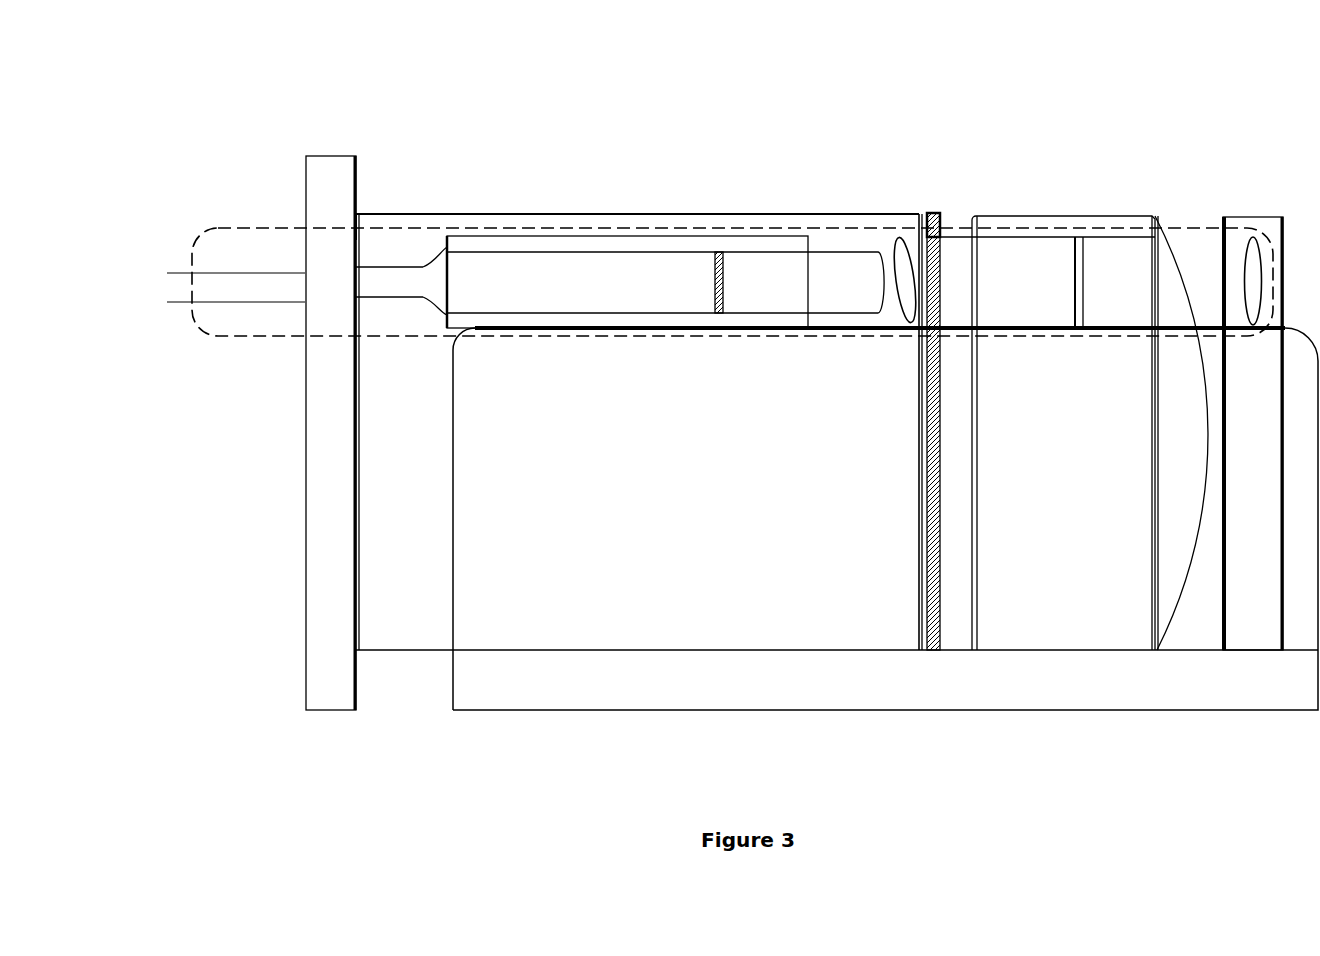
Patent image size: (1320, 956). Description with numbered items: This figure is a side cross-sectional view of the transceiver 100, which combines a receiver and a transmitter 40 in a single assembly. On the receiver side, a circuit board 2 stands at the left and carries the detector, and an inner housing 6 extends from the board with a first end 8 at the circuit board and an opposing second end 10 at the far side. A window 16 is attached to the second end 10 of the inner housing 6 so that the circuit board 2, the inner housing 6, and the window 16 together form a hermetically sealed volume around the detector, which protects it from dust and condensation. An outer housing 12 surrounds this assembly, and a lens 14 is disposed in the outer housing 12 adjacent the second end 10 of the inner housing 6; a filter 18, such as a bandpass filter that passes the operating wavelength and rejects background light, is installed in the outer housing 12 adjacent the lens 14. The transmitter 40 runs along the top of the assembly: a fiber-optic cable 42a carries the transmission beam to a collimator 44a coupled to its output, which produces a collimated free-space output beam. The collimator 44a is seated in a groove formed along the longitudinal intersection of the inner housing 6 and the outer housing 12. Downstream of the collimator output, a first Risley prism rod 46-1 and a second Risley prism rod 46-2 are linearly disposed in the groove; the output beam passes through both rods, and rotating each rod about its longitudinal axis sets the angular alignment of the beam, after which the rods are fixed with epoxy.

The transceiver 100 is at (825, 78).
The circuit board 2 is at (332, 165).
The fiber-optic cable 42a is at (258, 285).
The first end 8 is at (360, 218).
The inner housing 6 is at (622, 180).
The collimator 44a is at (668, 303).
The transmitter 40 is at (740, 337).
The second end 10 is at (921, 226).
The first Risley prism rod 46-1 is at (962, 237).
The second Risley prism rod 46-2 is at (1186, 237).
The lens 14 is at (1088, 464).
The window 16 is at (933, 652).
The filter 18 is at (1250, 218).
The outer housing 12 is at (1062, 682).